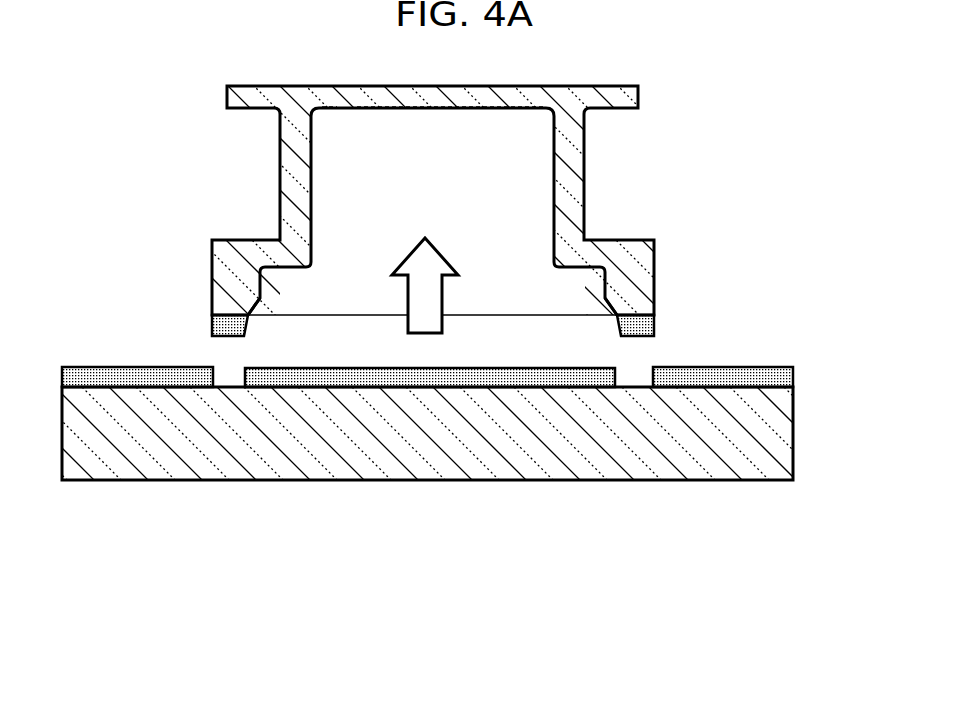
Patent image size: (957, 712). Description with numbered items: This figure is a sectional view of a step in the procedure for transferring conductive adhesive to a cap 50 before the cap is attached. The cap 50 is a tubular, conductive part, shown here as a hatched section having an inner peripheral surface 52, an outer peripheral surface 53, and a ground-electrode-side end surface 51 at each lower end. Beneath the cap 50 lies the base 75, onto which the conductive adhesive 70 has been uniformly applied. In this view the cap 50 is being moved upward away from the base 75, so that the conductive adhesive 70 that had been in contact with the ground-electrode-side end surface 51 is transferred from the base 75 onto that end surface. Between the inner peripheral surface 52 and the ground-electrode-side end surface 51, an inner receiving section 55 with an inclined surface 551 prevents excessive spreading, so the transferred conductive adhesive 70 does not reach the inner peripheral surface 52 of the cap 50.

The cap 50 is at (623, 97).
The ground-electrode-side end surface 51 is at (223, 340).
The inner peripheral surface 52 is at (315, 210).
The outer peripheral surface 53 is at (212, 282).
The inclined surface 551 is at (256, 312).
The inner receiving section 55 is at (265, 333).
The conductive adhesive 70 is at (783, 378).
The base 75 is at (775, 463).